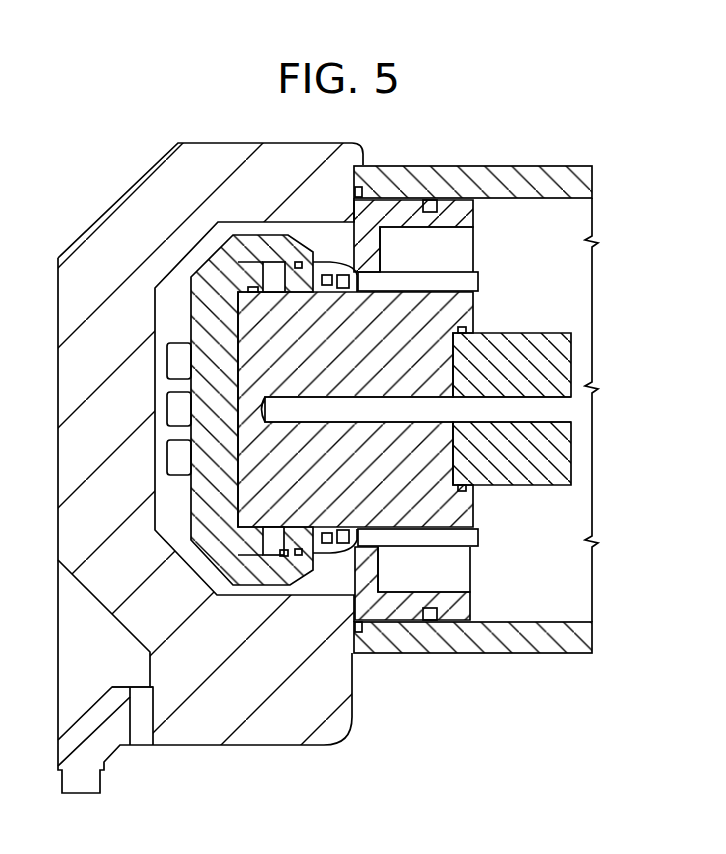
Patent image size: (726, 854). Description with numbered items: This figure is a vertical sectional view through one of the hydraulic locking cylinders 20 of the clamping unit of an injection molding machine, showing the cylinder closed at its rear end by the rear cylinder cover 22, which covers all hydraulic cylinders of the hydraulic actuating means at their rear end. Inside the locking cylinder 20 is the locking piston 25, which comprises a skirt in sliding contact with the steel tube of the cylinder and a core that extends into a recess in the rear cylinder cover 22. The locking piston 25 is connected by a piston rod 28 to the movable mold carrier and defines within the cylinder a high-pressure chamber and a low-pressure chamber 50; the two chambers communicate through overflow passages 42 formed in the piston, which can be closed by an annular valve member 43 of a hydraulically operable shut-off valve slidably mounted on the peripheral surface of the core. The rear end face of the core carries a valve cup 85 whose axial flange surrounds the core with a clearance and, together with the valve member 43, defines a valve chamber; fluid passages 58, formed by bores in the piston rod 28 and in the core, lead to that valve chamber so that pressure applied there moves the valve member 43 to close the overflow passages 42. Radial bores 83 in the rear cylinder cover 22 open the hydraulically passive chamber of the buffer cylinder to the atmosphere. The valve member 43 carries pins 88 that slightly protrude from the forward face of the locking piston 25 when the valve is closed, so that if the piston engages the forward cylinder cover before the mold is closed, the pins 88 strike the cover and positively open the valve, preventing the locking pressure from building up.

The hydraulic locking cylinder 20 is at (510, 178).
The rear cylinder cover 22 is at (210, 165).
The locking piston 25 is at (432, 185).
The piston rod 28 is at (530, 345).
The overflow passage 42 is at (440, 577).
The annular valve member 43 is at (320, 553).
The low-pressure chamber 50 is at (540, 234).
The fluid passage 58 is at (552, 410).
The radial bore 83 is at (143, 723).
The valve cup 85 is at (218, 278).
The pin 88 is at (458, 537).